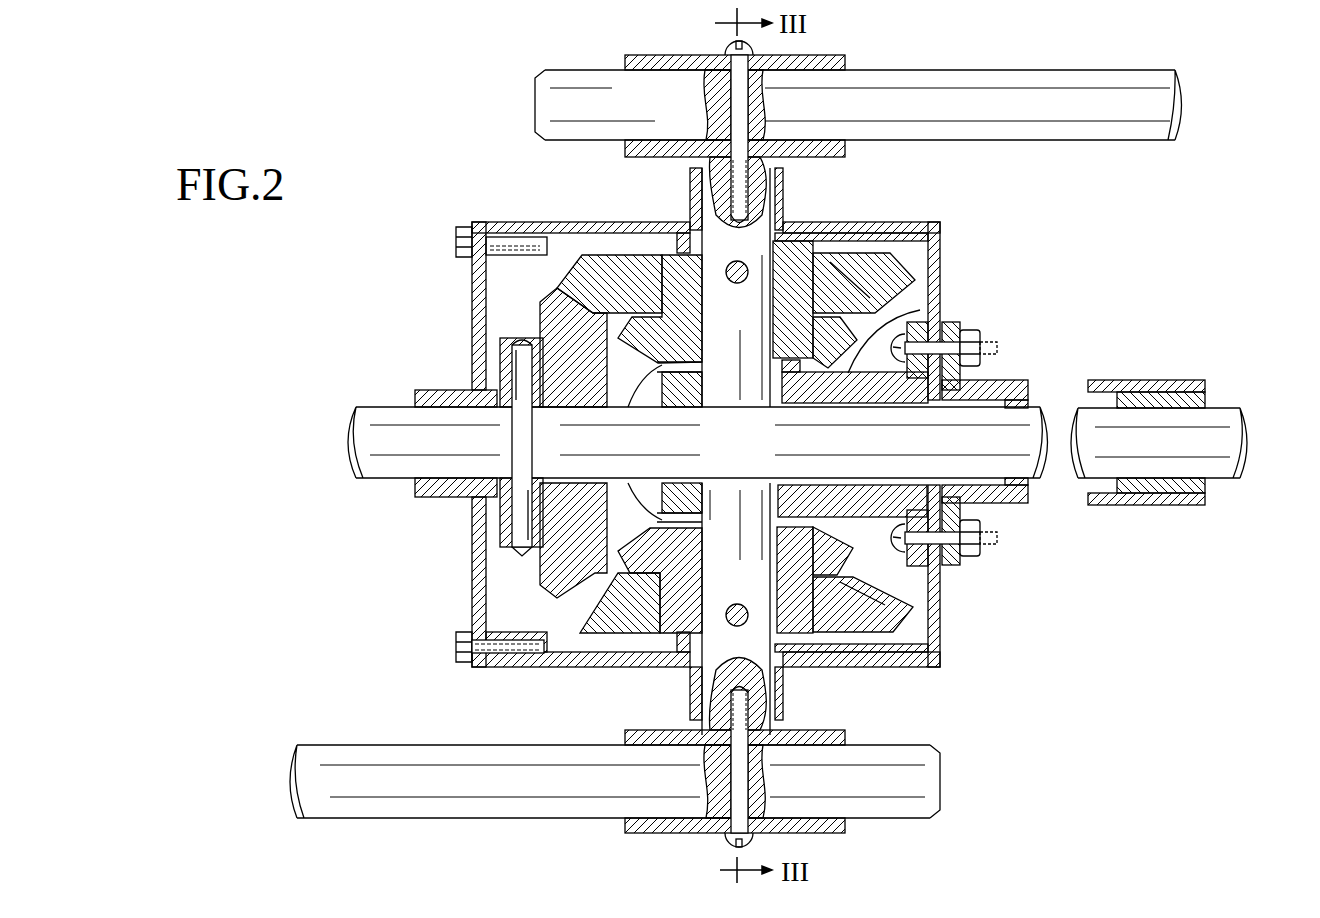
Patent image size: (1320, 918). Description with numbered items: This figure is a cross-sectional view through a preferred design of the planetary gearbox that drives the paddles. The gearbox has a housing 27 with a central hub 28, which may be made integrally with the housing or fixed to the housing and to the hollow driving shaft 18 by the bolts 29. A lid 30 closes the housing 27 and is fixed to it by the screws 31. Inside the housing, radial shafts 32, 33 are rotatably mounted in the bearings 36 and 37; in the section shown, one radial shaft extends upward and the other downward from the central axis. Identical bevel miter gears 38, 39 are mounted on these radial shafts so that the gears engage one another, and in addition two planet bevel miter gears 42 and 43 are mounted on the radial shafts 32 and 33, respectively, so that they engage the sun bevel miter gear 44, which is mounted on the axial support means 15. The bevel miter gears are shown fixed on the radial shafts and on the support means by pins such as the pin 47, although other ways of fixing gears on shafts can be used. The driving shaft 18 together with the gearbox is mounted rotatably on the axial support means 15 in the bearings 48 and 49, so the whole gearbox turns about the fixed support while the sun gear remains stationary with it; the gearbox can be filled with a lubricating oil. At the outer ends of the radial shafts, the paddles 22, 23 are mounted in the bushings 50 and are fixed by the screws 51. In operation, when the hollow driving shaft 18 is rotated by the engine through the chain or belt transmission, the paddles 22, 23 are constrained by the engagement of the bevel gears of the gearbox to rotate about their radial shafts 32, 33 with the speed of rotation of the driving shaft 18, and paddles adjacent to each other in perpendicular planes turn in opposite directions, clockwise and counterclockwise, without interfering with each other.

The axial support means 15 is at (1218, 420).
The hollow driving shaft 18 is at (955, 562).
The paddle 22 is at (550, 803).
The paddle 23 is at (925, 77).
The housing 27 is at (940, 252).
The central hub 28 is at (950, 312).
The bolts 29 is at (945, 345).
The lid 30 is at (480, 288).
The screws 31 is at (462, 242).
The radial shaft 32 is at (760, 657).
The radial shaft 33 is at (693, 220).
The bearings 36 is at (777, 210).
The bearings 37 is at (657, 365).
The bevel miter gear 38 is at (800, 620).
The bevel miter gear 39 is at (805, 262).
The planet bevel miter gear 42 is at (863, 623).
The planet bevel miter gear 43 is at (878, 262).
The sun bevel miter gear 44 is at (545, 588).
The pin 47 is at (520, 521).
The bearing 48 is at (440, 395).
The bearing 49 is at (1195, 395).
The bushings 50 is at (813, 62).
The screws 51 is at (733, 87).